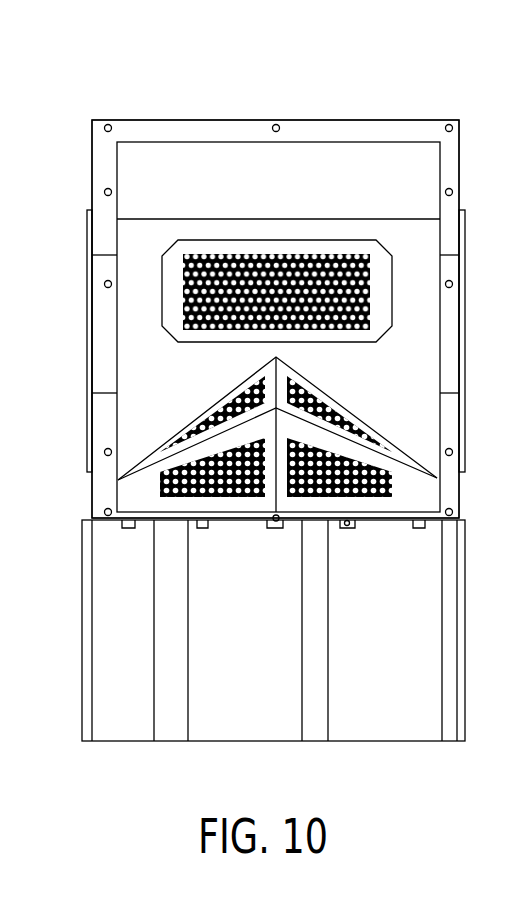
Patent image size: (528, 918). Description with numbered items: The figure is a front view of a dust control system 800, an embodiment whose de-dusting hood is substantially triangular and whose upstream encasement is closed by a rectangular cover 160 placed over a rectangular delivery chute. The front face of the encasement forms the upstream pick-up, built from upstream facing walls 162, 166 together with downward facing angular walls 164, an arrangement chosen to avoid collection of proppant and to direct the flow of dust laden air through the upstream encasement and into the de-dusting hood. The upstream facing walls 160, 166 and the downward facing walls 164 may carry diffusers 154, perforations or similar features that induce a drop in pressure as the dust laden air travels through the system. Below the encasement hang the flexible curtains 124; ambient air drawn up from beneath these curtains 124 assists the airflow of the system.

The dust control system 800 is at (205, 84).
The rectangular cover 160 is at (440, 165).
The upstream facing wall 162 is at (135, 407).
The diffusers 154 is at (187, 292).
The downward facing angular walls 164 is at (352, 422).
The upstream facing wall 166 is at (388, 478).
The flexible curtains 124 is at (418, 725).